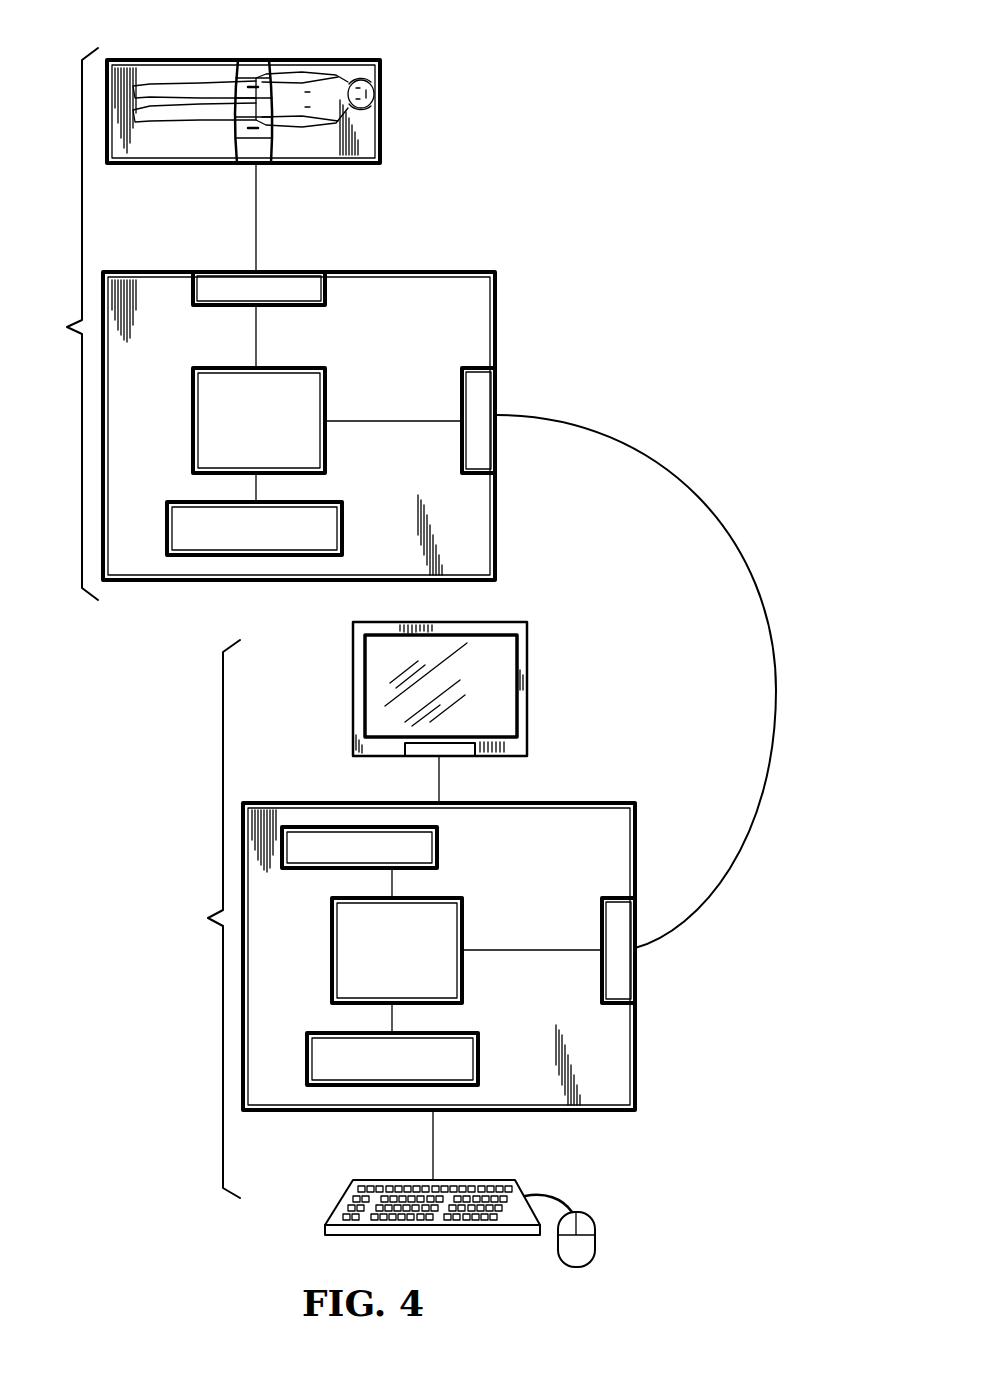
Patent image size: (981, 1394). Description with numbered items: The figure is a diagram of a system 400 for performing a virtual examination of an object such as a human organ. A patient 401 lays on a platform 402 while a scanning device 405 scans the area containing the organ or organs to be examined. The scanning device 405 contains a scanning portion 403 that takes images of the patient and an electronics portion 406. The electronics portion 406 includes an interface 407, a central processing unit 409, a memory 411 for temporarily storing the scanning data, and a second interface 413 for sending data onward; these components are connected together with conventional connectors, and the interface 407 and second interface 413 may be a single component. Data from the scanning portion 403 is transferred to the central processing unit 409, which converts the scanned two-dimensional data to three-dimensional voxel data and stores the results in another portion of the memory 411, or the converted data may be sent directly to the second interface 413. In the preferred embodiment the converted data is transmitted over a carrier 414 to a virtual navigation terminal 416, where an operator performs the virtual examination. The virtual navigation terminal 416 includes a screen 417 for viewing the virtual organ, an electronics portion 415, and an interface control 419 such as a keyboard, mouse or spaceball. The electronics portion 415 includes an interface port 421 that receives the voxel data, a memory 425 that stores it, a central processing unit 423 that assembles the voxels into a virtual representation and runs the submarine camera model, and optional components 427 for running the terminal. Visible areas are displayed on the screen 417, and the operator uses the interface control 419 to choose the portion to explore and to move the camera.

The system 400 is at (538, 205).
The patient 401 is at (362, 90).
The platform 402 is at (383, 137).
The scanning portion 403 is at (254, 60).
The scanning device 405 is at (63, 324).
The electronics portion 406 is at (390, 272).
The interface 407 is at (222, 287).
The central processing unit 409 is at (325, 378).
The memory 411 is at (342, 526).
The second interface 413 is at (484, 396).
The carrier 414 is at (625, 440).
The electronics portion 415 is at (573, 803).
The virtual navigation terminal 416 is at (203, 919).
The screen 417 is at (527, 652).
The interface control 419 is at (515, 1180).
The interface port 421 is at (637, 975).
The central processing unit 423 is at (462, 910).
The memory 425 is at (480, 1070).
The optional components 427 is at (320, 830).